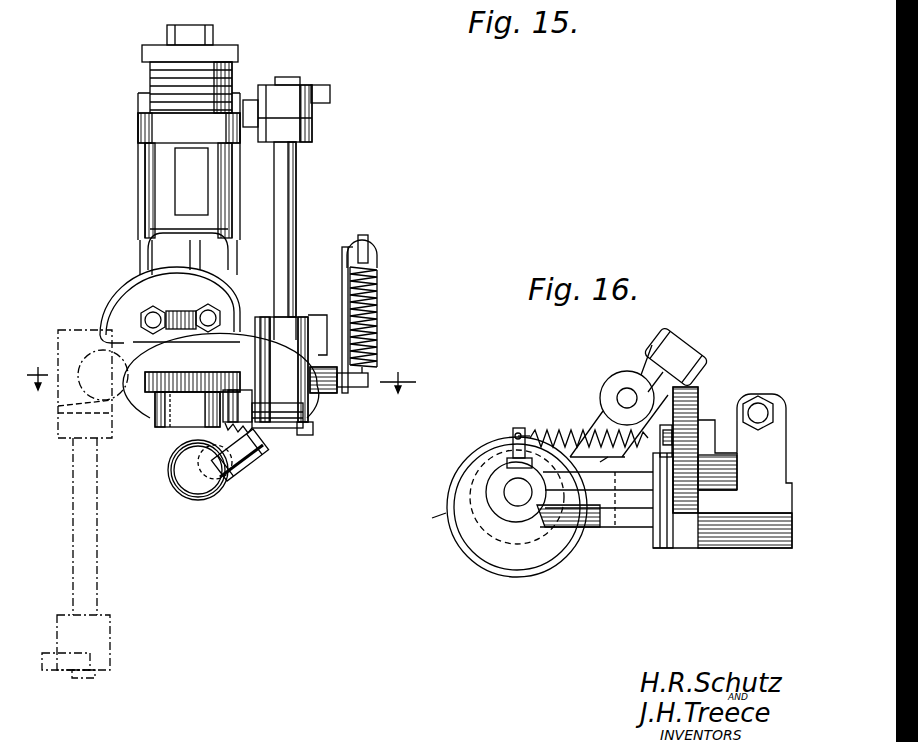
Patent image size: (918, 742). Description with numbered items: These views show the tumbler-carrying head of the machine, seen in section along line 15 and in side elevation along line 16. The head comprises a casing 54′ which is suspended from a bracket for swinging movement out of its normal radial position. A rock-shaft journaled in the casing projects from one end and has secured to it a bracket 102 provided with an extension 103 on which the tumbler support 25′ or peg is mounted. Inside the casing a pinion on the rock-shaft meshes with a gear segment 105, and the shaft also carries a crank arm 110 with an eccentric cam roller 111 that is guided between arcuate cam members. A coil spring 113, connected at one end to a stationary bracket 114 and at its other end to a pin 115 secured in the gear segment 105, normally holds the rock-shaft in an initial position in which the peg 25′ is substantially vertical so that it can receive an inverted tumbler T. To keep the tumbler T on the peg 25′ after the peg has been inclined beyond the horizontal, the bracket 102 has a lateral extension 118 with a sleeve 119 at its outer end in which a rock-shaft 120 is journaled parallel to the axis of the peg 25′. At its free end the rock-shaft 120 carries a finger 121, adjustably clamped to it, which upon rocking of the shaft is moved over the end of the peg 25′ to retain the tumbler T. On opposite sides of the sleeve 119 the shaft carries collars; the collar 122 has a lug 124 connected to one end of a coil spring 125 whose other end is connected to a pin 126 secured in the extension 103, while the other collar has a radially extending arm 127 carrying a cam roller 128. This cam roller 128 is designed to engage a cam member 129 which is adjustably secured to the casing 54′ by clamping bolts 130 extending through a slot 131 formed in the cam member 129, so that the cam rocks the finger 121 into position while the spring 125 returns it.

In FIG. 15, the casing 54′ is at (162, 173).
In FIG. 16, the casing 54′ is at (738, 530).
In FIG. 15, the bracket 102 is at (150, 400).
In FIG. 16, the bracket 102 is at (661, 549).
In FIG. 16, the extension 103 is at (603, 500).
In FIG. 15, the gear segment 105 is at (260, 435).
In FIG. 15, the crank arm 110 is at (240, 465).
In FIG. 15, the eccentric cam roller 111 is at (215, 497).
In FIG. 15, the coil spring 113 is at (375, 313).
In FIG. 15, the stationary bracket 114 is at (345, 258).
In FIG. 15, the pin 115 is at (368, 368).
In FIG. 15, the lateral extension 118 is at (235, 365).
In FIG. 16, the lateral extension 118 is at (596, 458).
In FIG. 15, the sleeve 119 is at (297, 350).
In FIG. 15, the rock-shaft 120 is at (290, 223).
In FIG. 15, the finger 121 is at (313, 88).
In FIG. 15, the collar 122 is at (275, 412).
In FIG. 16, the collar 122 is at (617, 378).
In FIG. 15, the lug 124 is at (285, 415).
In FIG. 16, the lug 124 is at (648, 450).
In FIG. 16, the coil spring 125 is at (553, 437).
In FIG. 15, the pin 126 is at (230, 420).
In FIG. 16, the pin 126 is at (521, 428).
In FIG. 16, the radially extending arm 127 is at (650, 355).
In FIG. 15, the cam roller 128 is at (305, 338).
In FIG. 16, the cam roller 128 is at (663, 333).
In FIG. 15, the cam member 129 is at (118, 307).
In FIG. 16, the cam member 129 is at (698, 393).
In FIG. 15, the clamping bolts 130 is at (208, 308).
In FIG. 16, the clamping bolts 130 is at (667, 438).
In FIG. 15, the slot 131 is at (173, 307).
In FIG. 15, the section line 15— 15 is at (32, 368).
In FIG. 15, the section line 16 is at (405, 379).
In FIG. 16, the tumbler support 25′ is at (490, 457).
In FIG. 16, the tumbler T is at (430, 521).